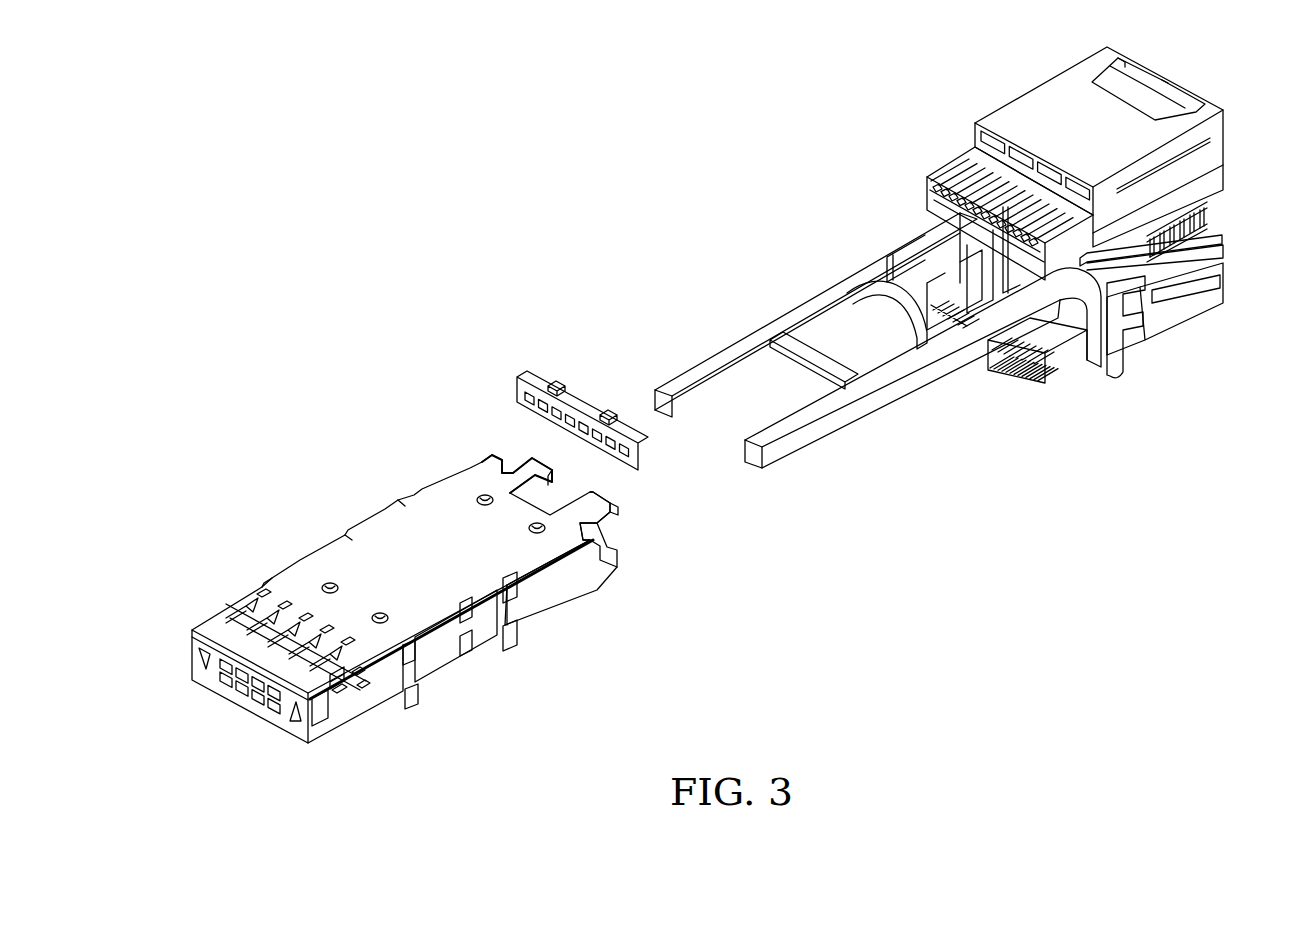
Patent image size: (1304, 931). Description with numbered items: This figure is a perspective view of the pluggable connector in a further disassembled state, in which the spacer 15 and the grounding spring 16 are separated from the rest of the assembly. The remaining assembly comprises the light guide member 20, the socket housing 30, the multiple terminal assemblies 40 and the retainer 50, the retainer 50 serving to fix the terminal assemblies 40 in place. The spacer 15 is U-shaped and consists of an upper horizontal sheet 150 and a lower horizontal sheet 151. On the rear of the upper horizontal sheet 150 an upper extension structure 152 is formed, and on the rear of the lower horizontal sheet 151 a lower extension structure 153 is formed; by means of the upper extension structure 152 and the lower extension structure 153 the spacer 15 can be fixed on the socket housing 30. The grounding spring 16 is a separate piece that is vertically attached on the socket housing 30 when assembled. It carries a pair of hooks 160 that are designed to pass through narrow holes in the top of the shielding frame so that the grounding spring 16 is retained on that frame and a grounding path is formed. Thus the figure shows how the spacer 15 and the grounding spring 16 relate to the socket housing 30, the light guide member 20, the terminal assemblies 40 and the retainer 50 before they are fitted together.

The spacer 15 is at (420, 508).
The upper horizontal sheet 150 is at (465, 520).
The lower horizontal sheet 151 is at (548, 585).
The upper extension structure 152 is at (530, 470).
The lower extension structure 153 is at (595, 548).
The grounding spring 16 is at (517, 377).
The hooks 160 is at (607, 417).
The light guide member 20 is at (815, 297).
The socket housing 30 is at (1040, 106).
The terminal assemblies 40 is at (1205, 215).
The retainer 50 is at (1203, 295).